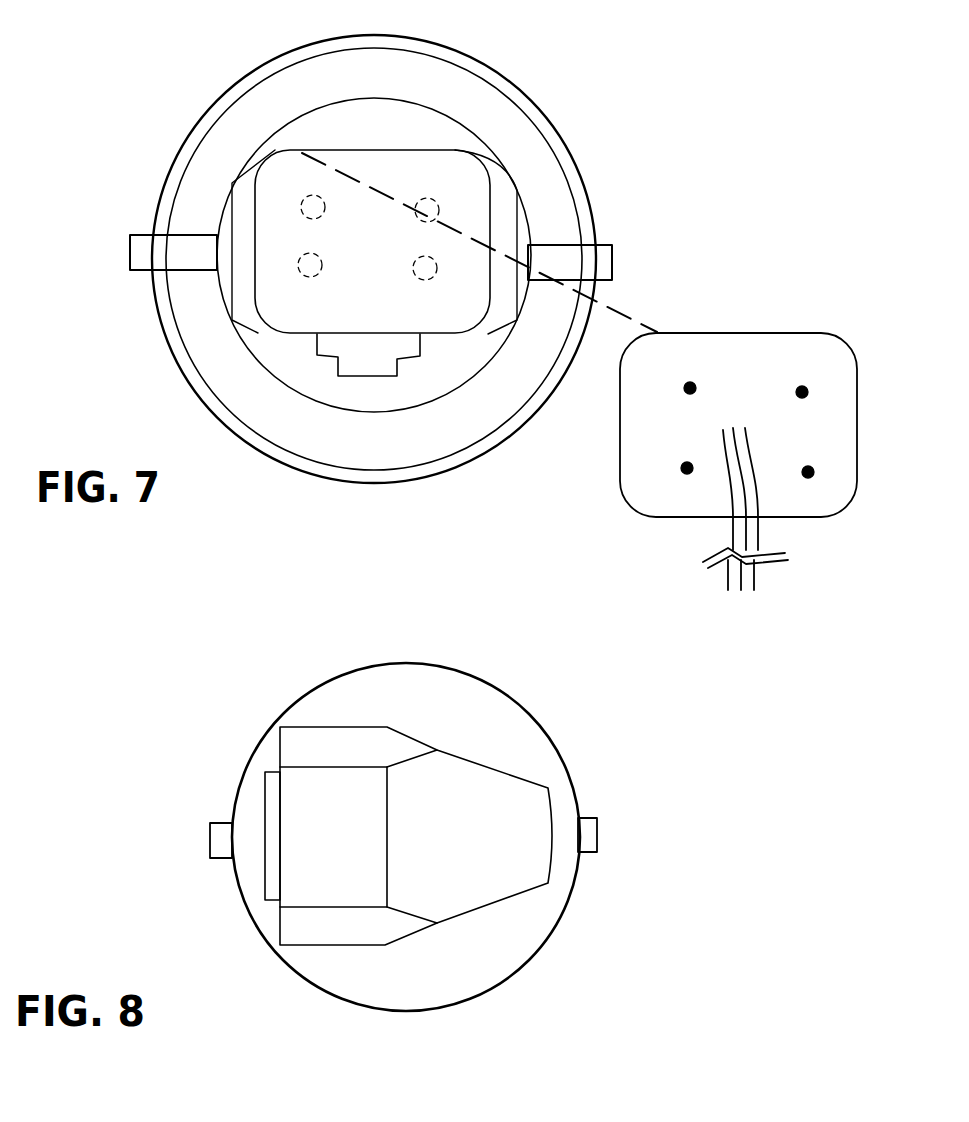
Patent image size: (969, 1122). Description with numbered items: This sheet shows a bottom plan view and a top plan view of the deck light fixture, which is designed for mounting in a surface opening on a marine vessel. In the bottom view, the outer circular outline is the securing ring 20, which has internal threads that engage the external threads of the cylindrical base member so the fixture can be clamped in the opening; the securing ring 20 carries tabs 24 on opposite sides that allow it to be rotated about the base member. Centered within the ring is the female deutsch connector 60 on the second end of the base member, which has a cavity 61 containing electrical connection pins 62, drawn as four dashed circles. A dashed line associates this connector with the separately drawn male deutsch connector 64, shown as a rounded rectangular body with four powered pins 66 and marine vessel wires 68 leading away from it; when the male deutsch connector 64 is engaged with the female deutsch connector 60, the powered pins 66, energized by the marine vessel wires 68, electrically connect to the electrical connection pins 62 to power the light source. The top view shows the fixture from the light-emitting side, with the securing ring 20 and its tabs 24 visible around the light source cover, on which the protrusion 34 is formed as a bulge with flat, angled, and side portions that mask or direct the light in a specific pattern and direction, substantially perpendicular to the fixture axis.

In FIG. 7, the securing ring 20 is at (218, 145).
In FIG. 7, the tabs 24 is at (140, 245).
In FIG. 8, the tabs 24 is at (597, 838).
In FIG. 8, the protrusion 34 is at (473, 860).
In FIG. 7, the female deutsch connector 60 is at (440, 153).
In FIG. 7, the cavity 61 is at (468, 200).
In FIG. 7, the electrical connection pins 62 is at (415, 213).
In FIG. 7, the male deutsch connector 64 is at (760, 342).
In FIG. 7, the powered pins 66 is at (687, 393).
In FIG. 7, the marine vessel wires 68 is at (752, 530).